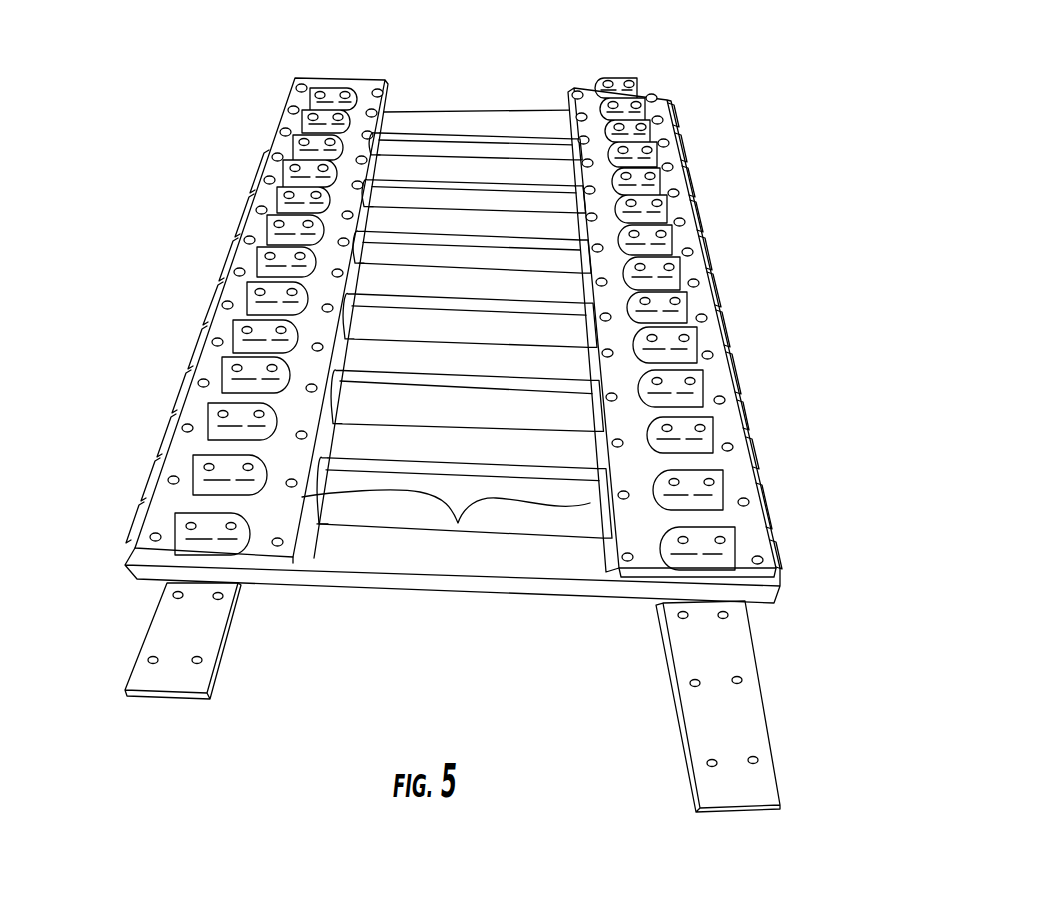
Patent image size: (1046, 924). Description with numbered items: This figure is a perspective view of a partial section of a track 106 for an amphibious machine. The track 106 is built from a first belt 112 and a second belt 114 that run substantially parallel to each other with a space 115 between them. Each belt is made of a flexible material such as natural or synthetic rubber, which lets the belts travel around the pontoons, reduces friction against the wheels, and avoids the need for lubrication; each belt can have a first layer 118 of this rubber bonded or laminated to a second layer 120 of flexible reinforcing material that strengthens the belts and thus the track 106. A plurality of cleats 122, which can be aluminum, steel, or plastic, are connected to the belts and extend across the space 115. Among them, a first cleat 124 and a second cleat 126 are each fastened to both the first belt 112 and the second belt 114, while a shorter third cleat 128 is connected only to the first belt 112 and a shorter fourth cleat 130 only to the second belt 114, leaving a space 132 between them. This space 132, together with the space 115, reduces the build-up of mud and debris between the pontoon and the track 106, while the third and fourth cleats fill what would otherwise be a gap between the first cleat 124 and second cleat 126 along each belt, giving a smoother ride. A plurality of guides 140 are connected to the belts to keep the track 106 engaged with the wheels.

The track 106 is at (783, 157).
The first belt 112 is at (707, 337).
The second belt 114 is at (267, 195).
The space 115 is at (387, 82).
The first layer 118 is at (170, 498).
The second layer 120 is at (180, 636).
The cleats 122 is at (533, 294).
The first cleat 124 is at (533, 553).
The second cleat 126 is at (447, 430).
The third cleat 128 is at (600, 488).
The fourth cleat 130 is at (310, 488).
The space 132 is at (460, 525).
The guides 140 is at (621, 114).